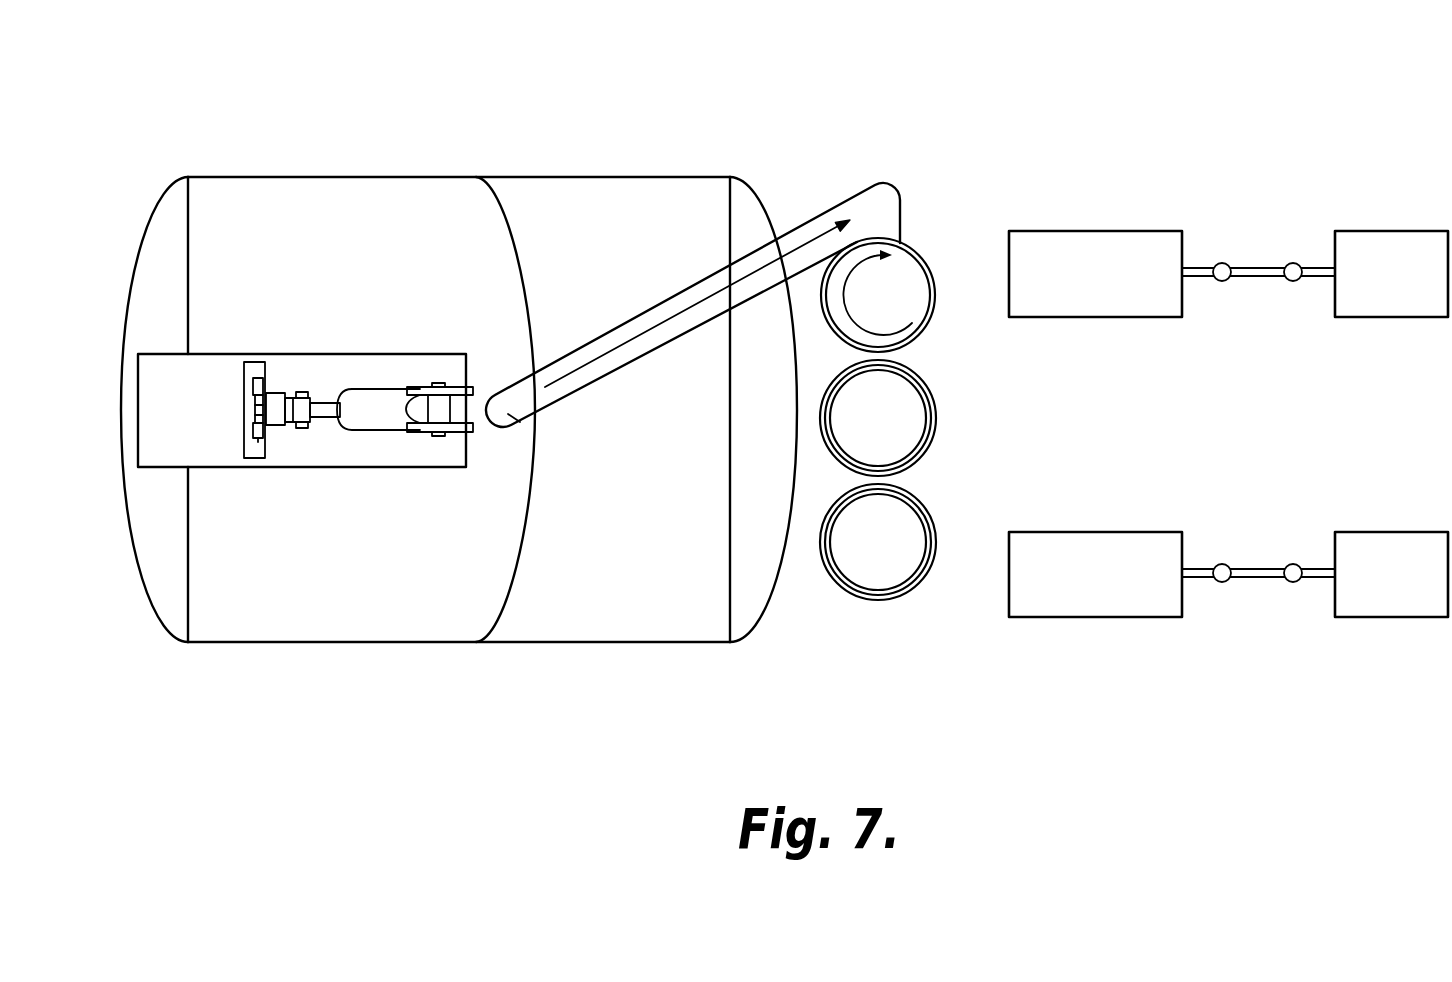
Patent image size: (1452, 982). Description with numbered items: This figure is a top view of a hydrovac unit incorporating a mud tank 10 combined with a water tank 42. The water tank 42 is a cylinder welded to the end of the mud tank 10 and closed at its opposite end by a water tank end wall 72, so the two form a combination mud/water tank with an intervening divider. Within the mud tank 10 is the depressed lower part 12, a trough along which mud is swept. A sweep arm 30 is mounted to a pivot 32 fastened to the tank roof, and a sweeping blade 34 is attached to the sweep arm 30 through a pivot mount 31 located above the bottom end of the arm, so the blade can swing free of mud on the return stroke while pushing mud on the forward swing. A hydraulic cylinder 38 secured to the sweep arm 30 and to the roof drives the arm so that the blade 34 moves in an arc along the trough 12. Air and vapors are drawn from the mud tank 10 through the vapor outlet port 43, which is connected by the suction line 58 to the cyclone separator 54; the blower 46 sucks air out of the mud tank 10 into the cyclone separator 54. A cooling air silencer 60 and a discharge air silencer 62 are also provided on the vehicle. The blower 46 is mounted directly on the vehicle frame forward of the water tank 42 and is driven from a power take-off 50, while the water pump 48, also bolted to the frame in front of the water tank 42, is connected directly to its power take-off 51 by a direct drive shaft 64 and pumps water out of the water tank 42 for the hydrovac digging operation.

The mud tank 10 is at (287, 177).
The depressed lower part 12 is at (172, 467).
The sweep arm 30 is at (273, 425).
The pivot mount 31 is at (258, 442).
The pivot 32 is at (455, 433).
The sweeping blade 34 is at (255, 367).
The hydraulic cylinder 38 is at (368, 397).
The water tank 42 is at (530, 177).
The vapor outlet port 43 is at (513, 418).
The blower 46 is at (1132, 231).
The water pump 48 is at (1125, 617).
The power take-off 50 is at (1393, 231).
The power take-off 51 is at (1400, 617).
The cyclone separator 54 is at (920, 260).
The suction line 58 is at (627, 323).
The cooling air silencer 60 is at (938, 425).
The discharge air silencer 62 is at (922, 580).
The direct drive shaft 64 is at (1262, 571).
The water tank end wall 72 is at (760, 617).